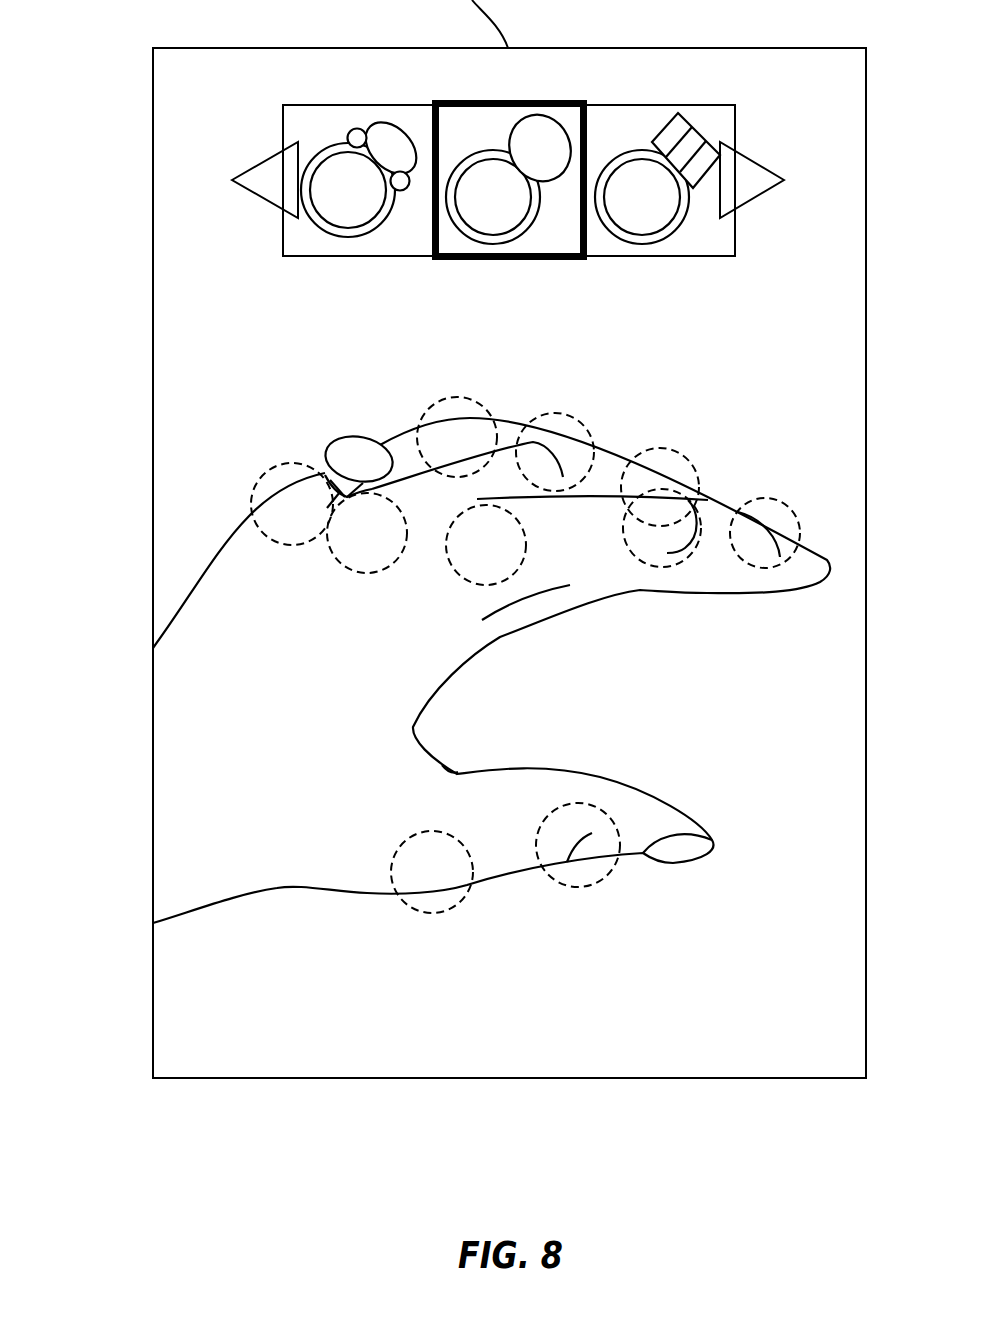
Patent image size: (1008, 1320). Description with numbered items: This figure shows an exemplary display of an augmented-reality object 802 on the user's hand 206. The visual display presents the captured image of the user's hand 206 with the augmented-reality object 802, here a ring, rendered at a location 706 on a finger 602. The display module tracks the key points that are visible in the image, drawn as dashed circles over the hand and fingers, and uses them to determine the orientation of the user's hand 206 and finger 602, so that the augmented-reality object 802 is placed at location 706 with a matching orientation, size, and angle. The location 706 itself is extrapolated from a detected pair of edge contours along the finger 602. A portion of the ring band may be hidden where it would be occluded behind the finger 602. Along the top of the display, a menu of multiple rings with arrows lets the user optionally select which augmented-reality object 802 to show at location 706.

The user's hand 206 is at (368, 895).
The augmented-reality object 802 is at (325, 455).
The location 706 is at (323, 472).
The finger 602 is at (403, 445).